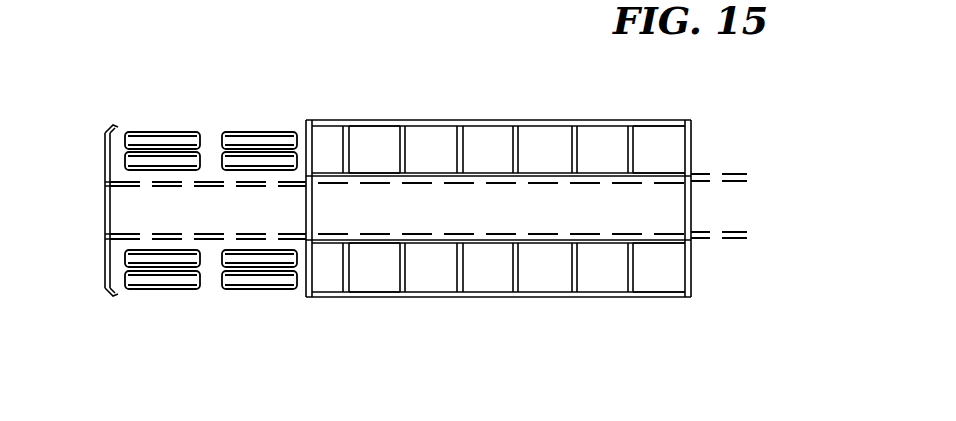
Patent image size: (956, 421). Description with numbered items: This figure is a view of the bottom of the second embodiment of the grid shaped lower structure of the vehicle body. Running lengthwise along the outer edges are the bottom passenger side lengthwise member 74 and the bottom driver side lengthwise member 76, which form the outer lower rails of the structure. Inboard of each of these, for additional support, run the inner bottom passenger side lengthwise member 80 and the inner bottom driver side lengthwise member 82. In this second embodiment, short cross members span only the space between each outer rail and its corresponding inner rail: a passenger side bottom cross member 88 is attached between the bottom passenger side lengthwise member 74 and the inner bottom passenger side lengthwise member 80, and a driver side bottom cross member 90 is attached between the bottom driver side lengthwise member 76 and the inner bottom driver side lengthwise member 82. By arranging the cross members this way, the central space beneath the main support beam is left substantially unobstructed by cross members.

The bottom passenger side lengthwise member 74 is at (494, 297).
The bottom driver side lengthwise member 76 is at (548, 119).
The inner bottom passenger side lengthwise member 80 is at (376, 244).
The inner bottom driver side lengthwise member 82 is at (372, 173).
The passenger side bottom cross member 88 is at (634, 265).
The driver side bottom cross member 90 is at (634, 148).